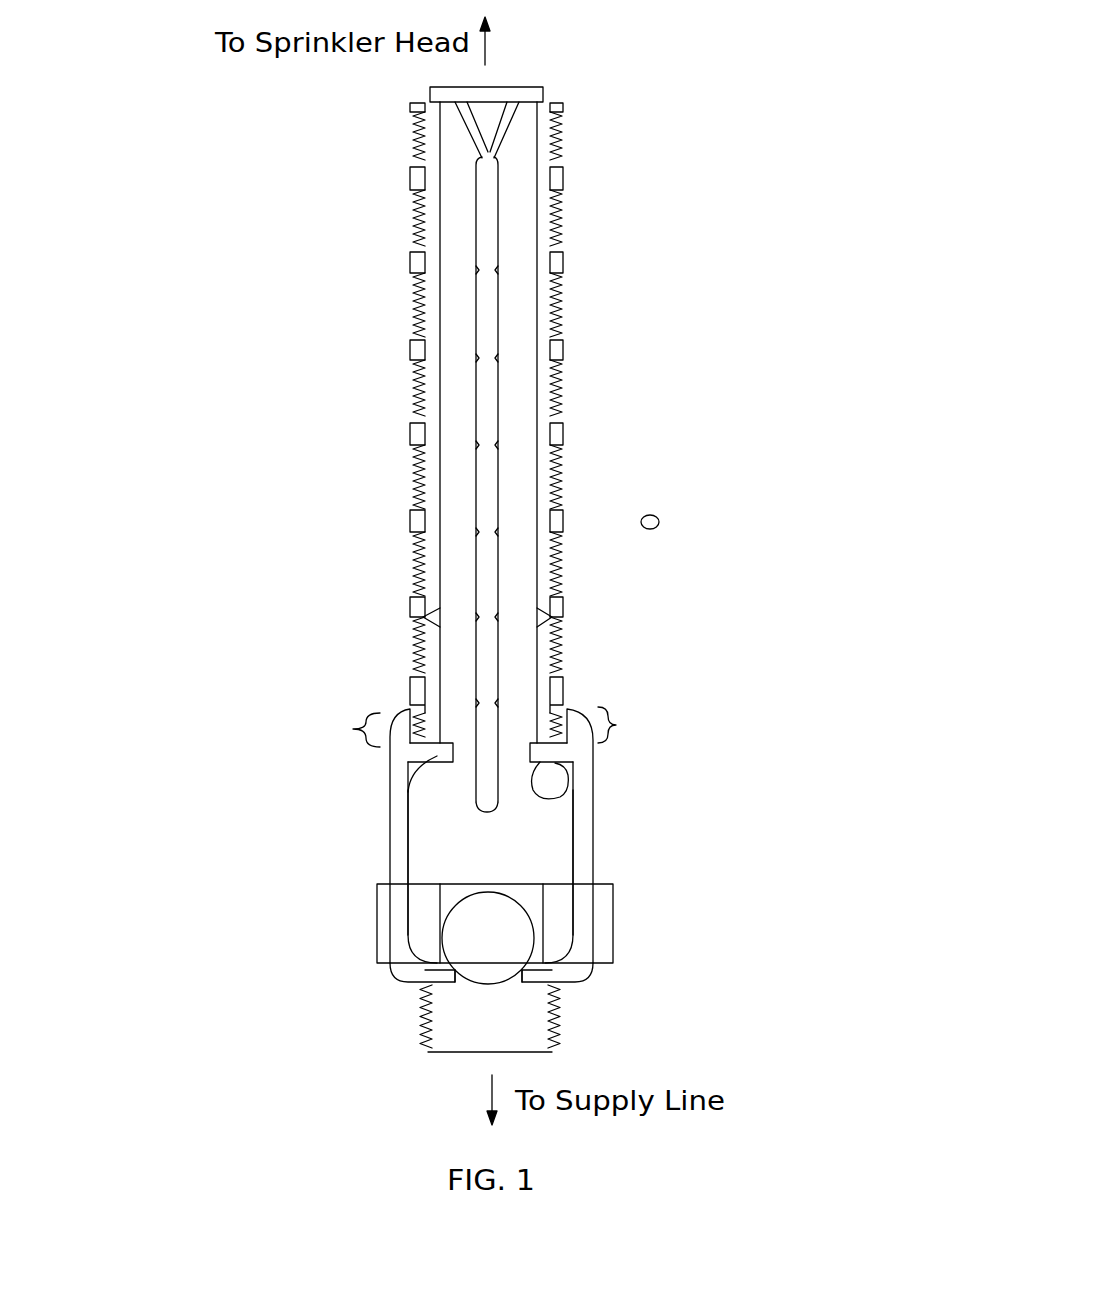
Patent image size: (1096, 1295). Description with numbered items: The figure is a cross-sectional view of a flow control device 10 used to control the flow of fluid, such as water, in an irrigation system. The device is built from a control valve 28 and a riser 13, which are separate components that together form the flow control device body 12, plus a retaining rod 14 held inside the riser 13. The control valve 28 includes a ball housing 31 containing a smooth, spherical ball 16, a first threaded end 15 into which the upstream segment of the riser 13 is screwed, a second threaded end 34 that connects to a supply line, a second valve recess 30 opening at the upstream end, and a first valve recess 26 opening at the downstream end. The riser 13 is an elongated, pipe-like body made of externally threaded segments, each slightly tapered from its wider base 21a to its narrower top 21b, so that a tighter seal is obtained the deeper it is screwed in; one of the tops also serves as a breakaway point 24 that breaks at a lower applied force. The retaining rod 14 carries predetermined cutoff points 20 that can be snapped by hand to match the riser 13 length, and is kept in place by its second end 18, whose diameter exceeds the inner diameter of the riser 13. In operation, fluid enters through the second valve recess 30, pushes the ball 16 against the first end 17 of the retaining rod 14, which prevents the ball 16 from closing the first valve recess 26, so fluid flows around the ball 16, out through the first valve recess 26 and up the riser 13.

The flow control device 10 is at (692, 37).
The flow control device body 12 is at (585, 74).
The riser 13 is at (328, 711).
The retaining rod 14 is at (486, 212).
The first threaded end 15 is at (380, 713).
The ball 16 is at (490, 937).
The first end of the retaining rod 17 is at (443, 807).
The second end 18 is at (543, 100).
The predetermined cutoff points 20 is at (498, 703).
The base 21a is at (422, 515).
The top 21b is at (552, 191).
The breakaway point 24 is at (410, 612).
The first valve recess 26 is at (437, 752).
The control valve 28 is at (633, 705).
The second valve recess 30 is at (527, 993).
The ball housing 31 is at (365, 777).
The second threaded end 34 is at (412, 987).